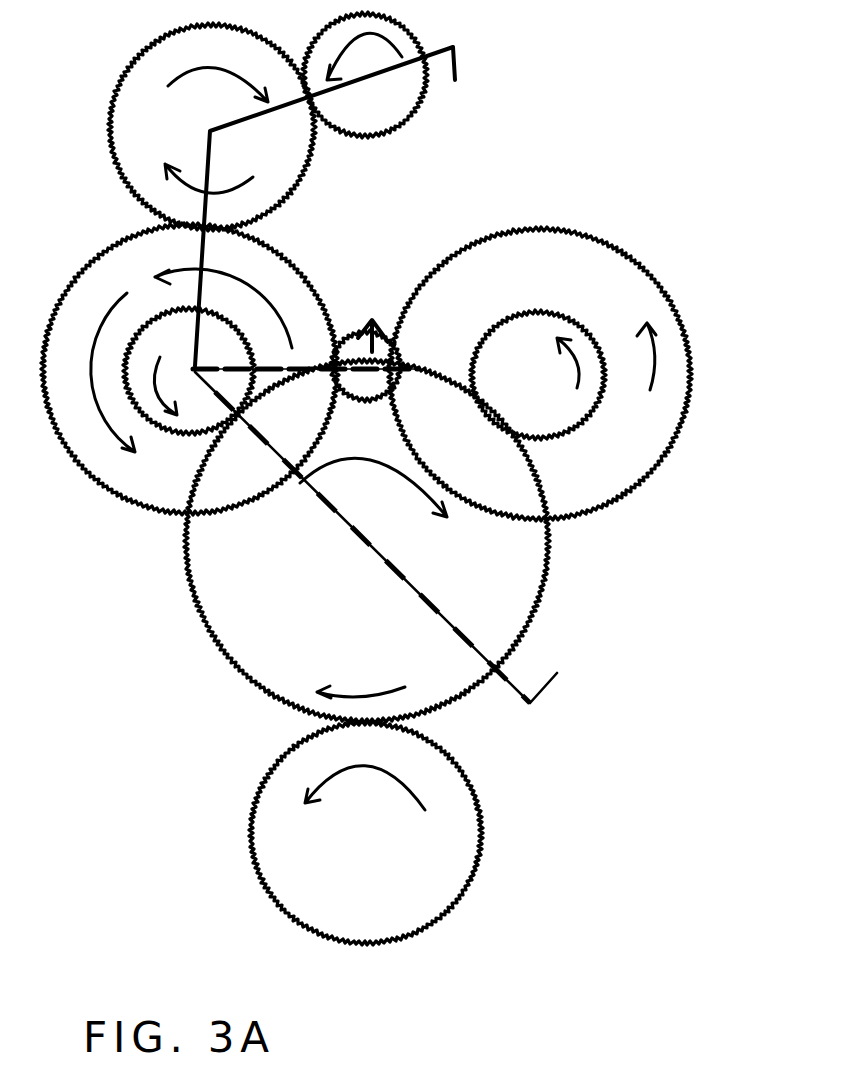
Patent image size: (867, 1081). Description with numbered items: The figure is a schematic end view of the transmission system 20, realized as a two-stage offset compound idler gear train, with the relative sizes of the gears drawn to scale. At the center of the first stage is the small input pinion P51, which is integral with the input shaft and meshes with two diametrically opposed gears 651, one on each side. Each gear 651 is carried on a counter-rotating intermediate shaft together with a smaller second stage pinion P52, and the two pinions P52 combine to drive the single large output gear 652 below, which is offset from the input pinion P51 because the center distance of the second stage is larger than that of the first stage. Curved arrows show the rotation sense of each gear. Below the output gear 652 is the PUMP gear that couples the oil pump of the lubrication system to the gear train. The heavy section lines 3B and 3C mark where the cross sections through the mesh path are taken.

The transmission system 20 is at (647, 182).
The input pinion P51 is at (350, 357).
The second stage pinion P52 is at (128, 391).
The gear 651 is at (127, 500).
The output gear 652 is at (235, 672).
The PUMP gear PUMP is at (475, 845).
The section line 3B is at (397, 489).
The section line 3C is at (341, 206).